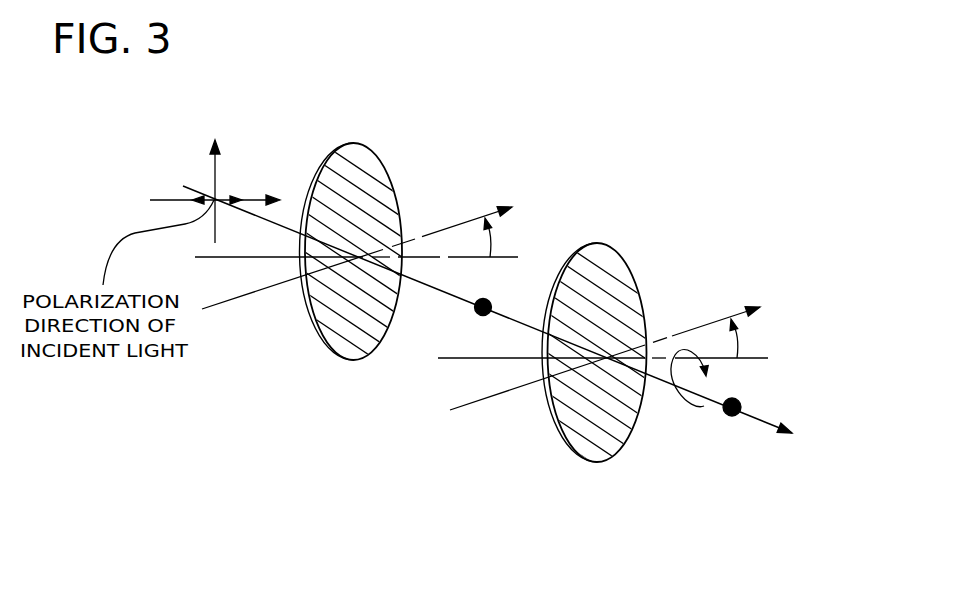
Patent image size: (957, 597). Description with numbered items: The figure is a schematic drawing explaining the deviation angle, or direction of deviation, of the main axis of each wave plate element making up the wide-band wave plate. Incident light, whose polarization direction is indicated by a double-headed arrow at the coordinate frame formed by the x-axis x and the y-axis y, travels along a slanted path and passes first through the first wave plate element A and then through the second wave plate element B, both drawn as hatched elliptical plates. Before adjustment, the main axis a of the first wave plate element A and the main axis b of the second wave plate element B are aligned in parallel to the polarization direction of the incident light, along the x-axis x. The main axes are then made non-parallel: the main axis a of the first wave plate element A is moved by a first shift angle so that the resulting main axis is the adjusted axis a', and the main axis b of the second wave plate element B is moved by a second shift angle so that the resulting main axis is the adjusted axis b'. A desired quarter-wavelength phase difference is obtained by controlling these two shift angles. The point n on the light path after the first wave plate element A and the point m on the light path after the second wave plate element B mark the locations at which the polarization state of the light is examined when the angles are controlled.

The first wave plate element A is at (304, 310).
The second wave plate element B is at (548, 422).
The main axis of first wave plate element before adjustment a is at (356, 273).
The main axis of first wave plate element after adjustment a' is at (357, 240).
The main axis of second wave plate element before adjustment b is at (627, 367).
The main axis of second wave plate element after adjustment b' is at (605, 341).
The point n is at (480, 316).
The point m is at (732, 417).
The x-axis x is at (215, 188).
The y-axis y is at (214, 176).